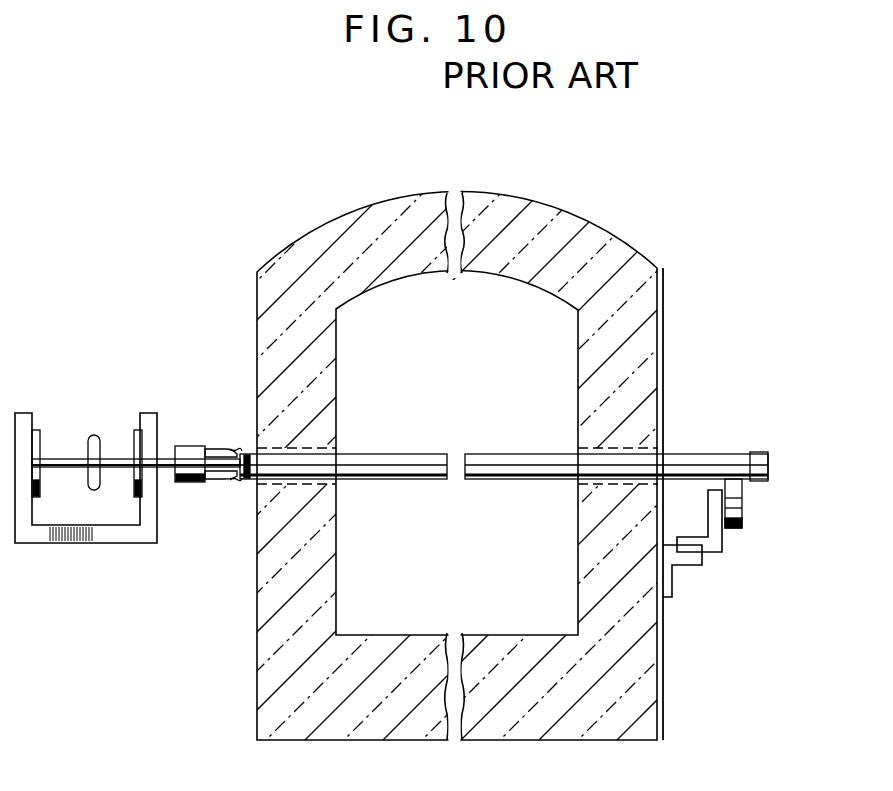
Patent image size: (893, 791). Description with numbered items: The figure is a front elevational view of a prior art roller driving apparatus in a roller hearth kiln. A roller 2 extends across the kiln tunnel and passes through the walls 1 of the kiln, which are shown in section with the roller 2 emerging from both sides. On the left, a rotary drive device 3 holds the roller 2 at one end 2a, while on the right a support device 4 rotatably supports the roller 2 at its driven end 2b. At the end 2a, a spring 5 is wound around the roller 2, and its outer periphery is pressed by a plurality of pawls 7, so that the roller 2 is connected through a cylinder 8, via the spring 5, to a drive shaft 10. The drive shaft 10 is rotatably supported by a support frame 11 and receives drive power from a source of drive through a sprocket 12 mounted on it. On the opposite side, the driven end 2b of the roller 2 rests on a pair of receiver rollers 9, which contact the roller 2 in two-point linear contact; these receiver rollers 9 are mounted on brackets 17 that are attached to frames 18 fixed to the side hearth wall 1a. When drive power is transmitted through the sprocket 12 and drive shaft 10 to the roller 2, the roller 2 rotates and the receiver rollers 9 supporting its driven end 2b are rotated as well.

The kiln wall 1 is at (545, 232).
The side hearth wall 1a is at (664, 668).
The roller 2 is at (416, 480).
The roller end 2a is at (247, 482).
The driven end 2b is at (755, 452).
The rotary drive device 3 is at (78, 382).
The support device 4 is at (697, 435).
The spring 5 is at (238, 450).
The pawl 7 is at (226, 449).
The cylinder 8 is at (182, 483).
The receiver roller 9 is at (742, 505).
The drive shaft 10 is at (120, 456).
The support frame 11 is at (93, 538).
The sprocket 12 is at (93, 435).
The bracket 17 is at (725, 546).
The frame 18 is at (697, 567).